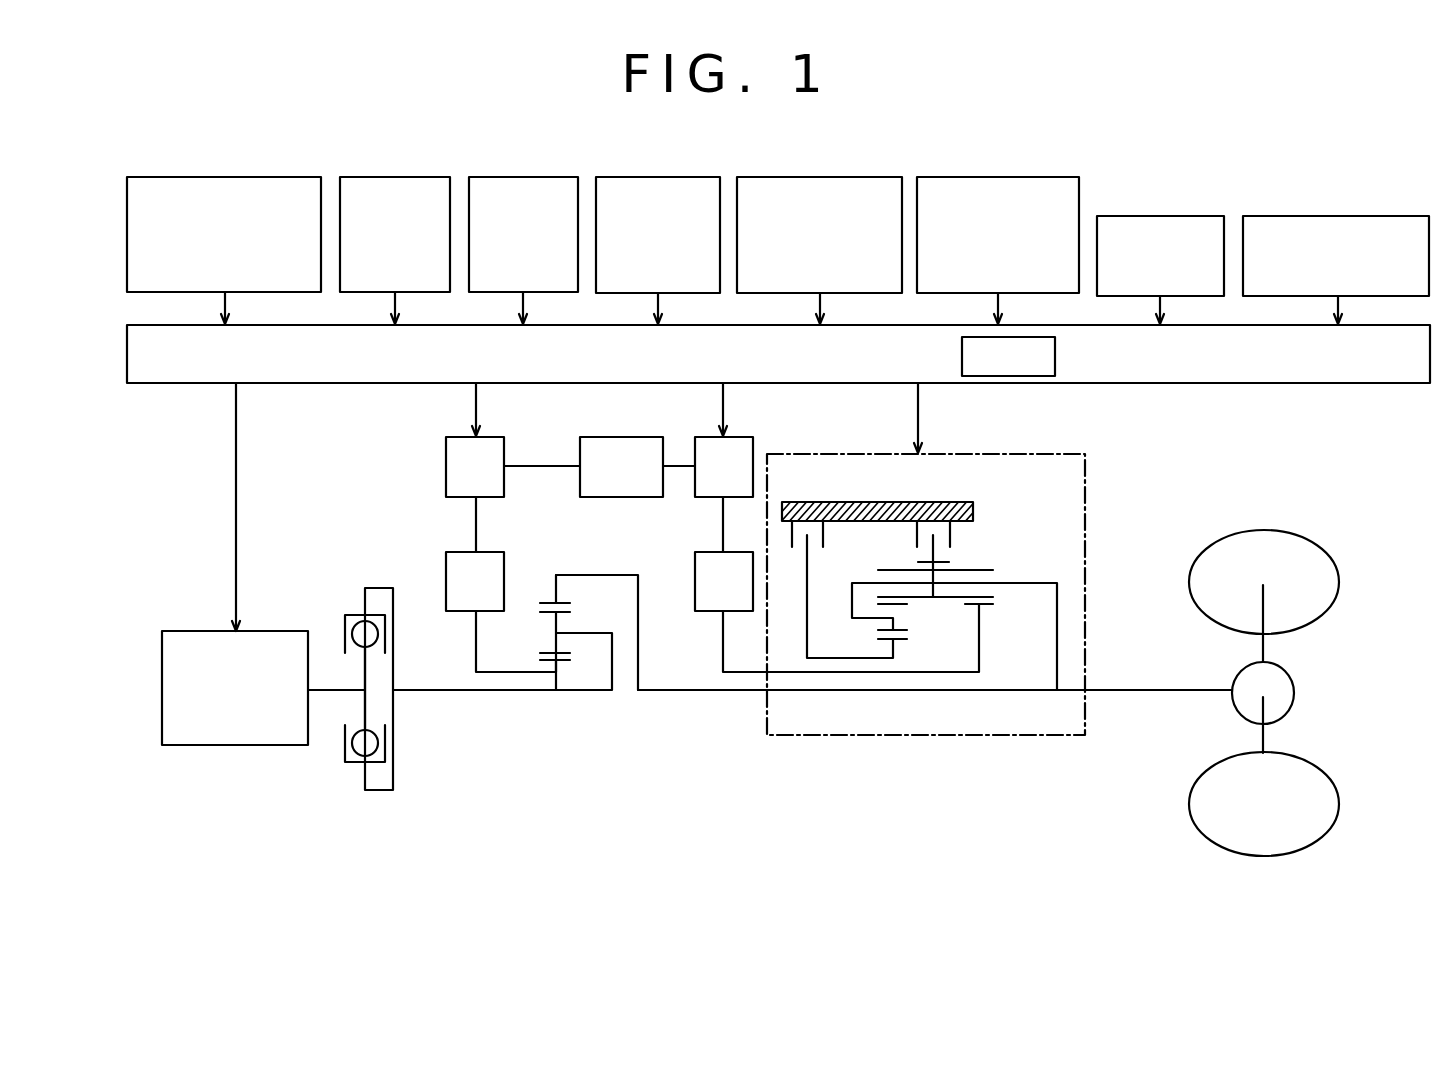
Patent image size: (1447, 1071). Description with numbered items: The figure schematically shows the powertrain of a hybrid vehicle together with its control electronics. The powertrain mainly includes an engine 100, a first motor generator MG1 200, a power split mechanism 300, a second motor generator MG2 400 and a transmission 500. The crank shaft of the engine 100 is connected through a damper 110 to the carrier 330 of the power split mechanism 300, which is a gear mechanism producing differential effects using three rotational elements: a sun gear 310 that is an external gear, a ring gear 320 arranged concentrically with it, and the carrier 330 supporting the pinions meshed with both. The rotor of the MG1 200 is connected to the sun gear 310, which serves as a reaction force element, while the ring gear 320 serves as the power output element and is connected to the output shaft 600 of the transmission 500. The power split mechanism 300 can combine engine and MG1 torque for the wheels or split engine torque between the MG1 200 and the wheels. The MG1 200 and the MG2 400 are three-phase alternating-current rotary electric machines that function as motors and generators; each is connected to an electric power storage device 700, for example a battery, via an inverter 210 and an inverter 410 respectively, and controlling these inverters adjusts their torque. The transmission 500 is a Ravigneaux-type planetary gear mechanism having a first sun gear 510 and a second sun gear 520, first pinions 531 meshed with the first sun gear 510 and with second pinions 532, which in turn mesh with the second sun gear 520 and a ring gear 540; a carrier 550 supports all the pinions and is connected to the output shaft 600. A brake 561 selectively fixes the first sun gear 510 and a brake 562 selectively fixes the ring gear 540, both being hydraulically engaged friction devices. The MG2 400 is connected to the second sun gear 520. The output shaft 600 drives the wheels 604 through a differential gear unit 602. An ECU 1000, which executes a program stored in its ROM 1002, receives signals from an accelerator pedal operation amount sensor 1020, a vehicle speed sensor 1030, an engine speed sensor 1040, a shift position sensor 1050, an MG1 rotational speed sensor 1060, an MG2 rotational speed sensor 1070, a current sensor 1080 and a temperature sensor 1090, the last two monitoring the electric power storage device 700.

The engine 100 is at (248, 745).
The damper 110 is at (352, 762).
The first motor generator (MG1) 200 is at (446, 563).
The inverter 210 is at (490, 437).
The power split mechanism 300 is at (812, 652).
The sun gear (S) 310 is at (565, 662).
The ring gear (R) 320 is at (553, 603).
The carrier (C) 330 is at (583, 633).
The second motor generator (MG2) 400 is at (710, 611).
The inverter 410 is at (740, 437).
The transmission 500 is at (960, 559).
The first sun gear (S1) 510 is at (905, 643).
The second sun gear (S2) 520 is at (983, 607).
The first pinions 531 is at (903, 632).
The second pinions 532 is at (900, 568).
The ring gear (R) 540 is at (947, 563).
The carrier (C) 550 is at (1020, 583).
The brake (B1) 561 is at (820, 512).
The brake (B2) 562 is at (943, 527).
The output shaft 600 is at (1130, 692).
The differential gear unit 602 is at (1294, 693).
The wheels 604 is at (1315, 542).
The electric power storage device 700 is at (620, 437).
The ECU 1000 is at (1285, 383).
The ROM 1002 is at (1005, 376).
The accelerator pedal operation amount sensor 1020 is at (225, 177).
The vehicle speed sensor 1030 is at (395, 177).
The engine speed sensor 1040 is at (523, 177).
The shift position sensor 1050 is at (658, 177).
The MG1 rotational speed sensor 1060 is at (820, 177).
The MG2 rotational speed sensor 1070 is at (998, 177).
The current sensor 1080 is at (1160, 216).
The temperature sensor 1090 is at (1338, 216).